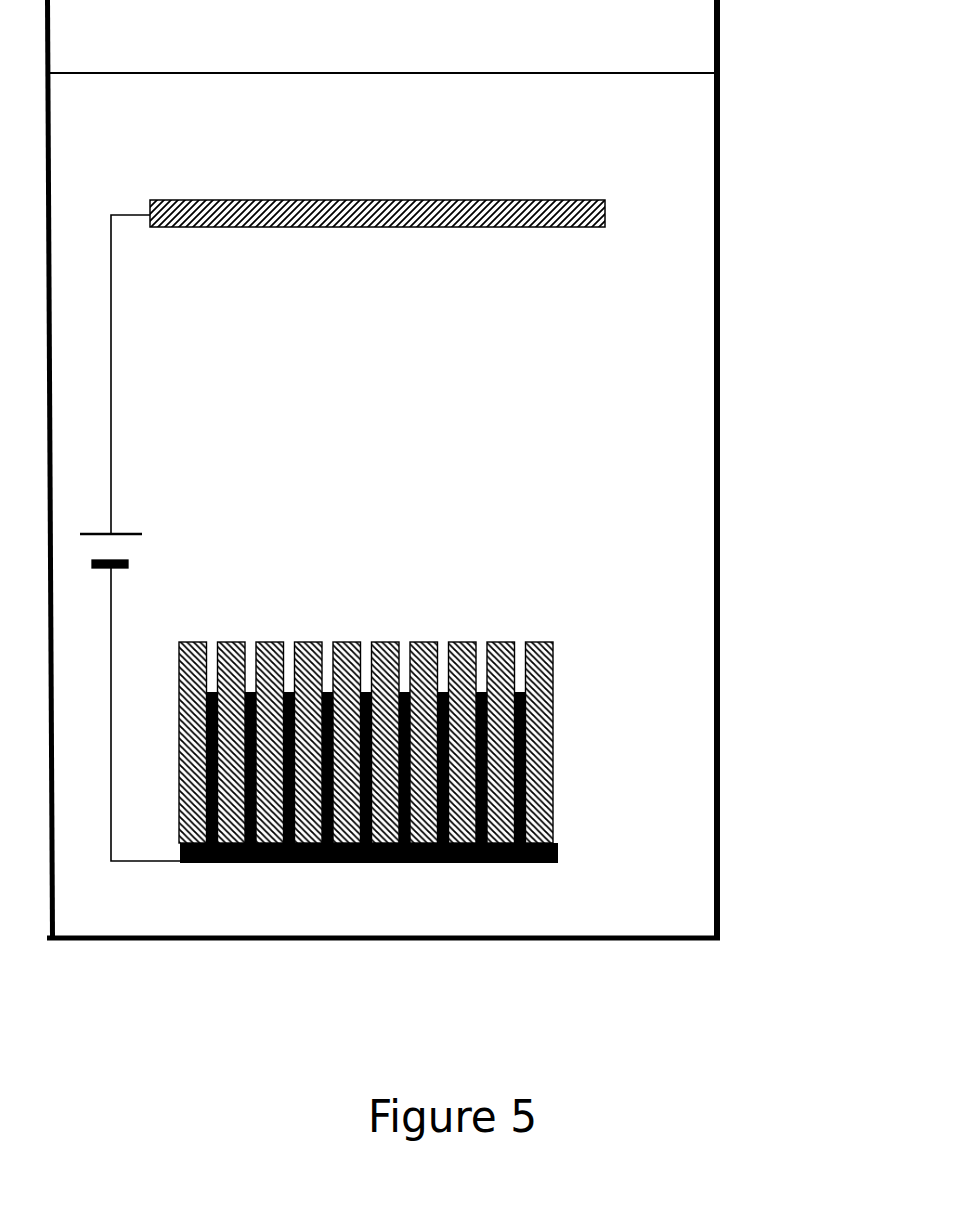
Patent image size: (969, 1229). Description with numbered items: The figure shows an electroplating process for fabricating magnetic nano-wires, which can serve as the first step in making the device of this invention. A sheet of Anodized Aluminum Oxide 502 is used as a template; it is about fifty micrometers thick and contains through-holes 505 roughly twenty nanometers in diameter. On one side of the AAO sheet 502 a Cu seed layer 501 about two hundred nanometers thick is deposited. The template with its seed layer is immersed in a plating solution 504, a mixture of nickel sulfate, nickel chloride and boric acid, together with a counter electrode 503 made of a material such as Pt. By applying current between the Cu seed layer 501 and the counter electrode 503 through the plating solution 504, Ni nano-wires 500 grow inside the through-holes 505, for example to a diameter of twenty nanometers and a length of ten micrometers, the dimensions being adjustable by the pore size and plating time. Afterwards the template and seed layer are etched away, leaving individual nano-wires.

The Ni nano-wires 500 is at (448, 695).
The Cu seed layer 501 is at (558, 858).
The Anodized Aluminum Oxide sheet 502 is at (424, 680).
The counter electrode 503 is at (426, 202).
The plating solution 504 is at (692, 375).
The through-holes 505 is at (371, 660).